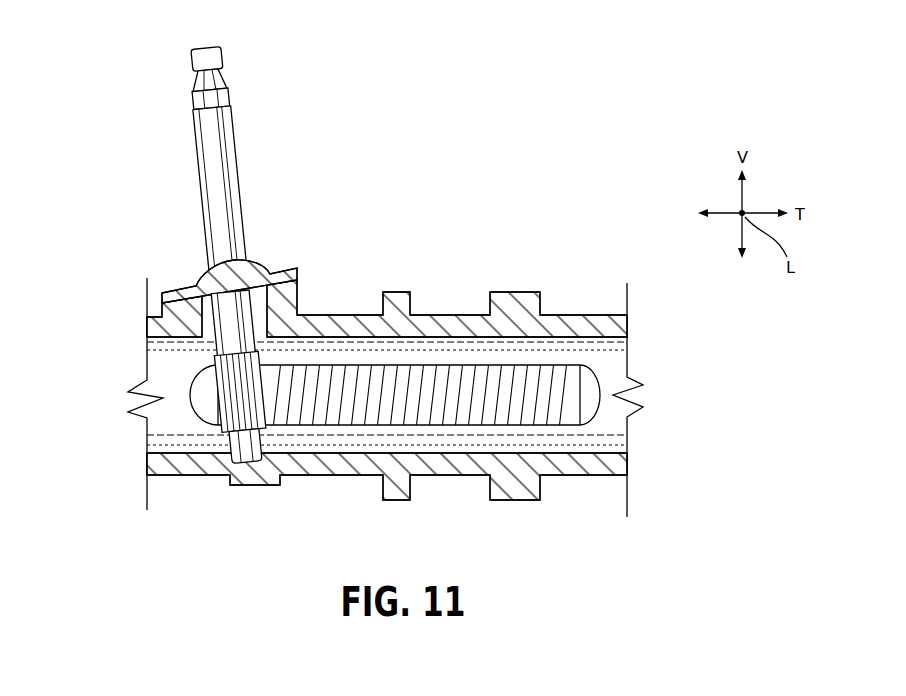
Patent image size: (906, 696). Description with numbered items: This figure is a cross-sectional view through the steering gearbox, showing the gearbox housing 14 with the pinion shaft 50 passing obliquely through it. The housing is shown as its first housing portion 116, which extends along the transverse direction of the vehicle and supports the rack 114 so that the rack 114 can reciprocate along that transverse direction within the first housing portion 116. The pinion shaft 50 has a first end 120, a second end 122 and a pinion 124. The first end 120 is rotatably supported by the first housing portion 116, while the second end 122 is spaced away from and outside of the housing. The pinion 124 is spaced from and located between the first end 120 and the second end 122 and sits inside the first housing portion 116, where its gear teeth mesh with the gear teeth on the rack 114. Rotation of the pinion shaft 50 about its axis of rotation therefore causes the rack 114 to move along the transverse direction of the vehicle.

The gearbox housing 14 is at (364, 269).
The pinion shaft 50 is at (238, 138).
The rack 114 is at (545, 372).
The first housing portion 116 is at (345, 477).
The first end 120 is at (246, 456).
The second end 122 is at (220, 47).
The pinion 124 is at (215, 428).